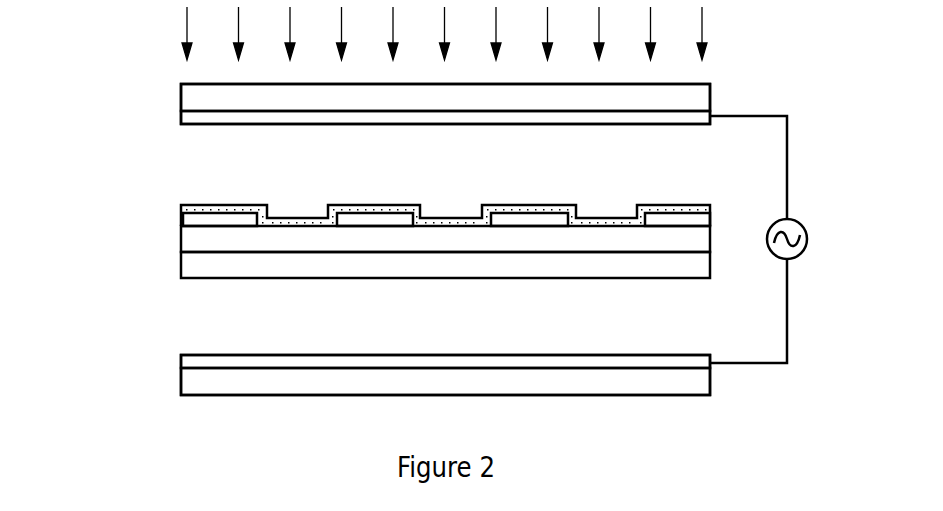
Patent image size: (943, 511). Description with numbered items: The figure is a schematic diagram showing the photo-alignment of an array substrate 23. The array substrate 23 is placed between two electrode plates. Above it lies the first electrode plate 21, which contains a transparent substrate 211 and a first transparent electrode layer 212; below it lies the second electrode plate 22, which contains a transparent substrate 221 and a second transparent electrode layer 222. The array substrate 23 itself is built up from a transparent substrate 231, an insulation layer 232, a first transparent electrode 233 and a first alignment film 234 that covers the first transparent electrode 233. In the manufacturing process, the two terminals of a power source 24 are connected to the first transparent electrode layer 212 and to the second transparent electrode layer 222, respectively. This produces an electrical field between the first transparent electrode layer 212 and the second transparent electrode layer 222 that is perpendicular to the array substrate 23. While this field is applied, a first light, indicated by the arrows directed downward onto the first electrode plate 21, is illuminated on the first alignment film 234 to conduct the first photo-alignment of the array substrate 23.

The first electrode plate 21 is at (80, 93).
The transparent substrate 211 is at (207, 95).
The first transparent electrode layer 212 is at (213, 117).
The second electrode plate 22 is at (80, 328).
The transparent substrate 221 is at (207, 380).
The second transparent electrode layer 222 is at (222, 358).
The array substrate 23 is at (80, 165).
The transparent substrate 231 is at (213, 264).
The insulation layer 232 is at (207, 239).
The first transparent electrode 233 is at (215, 218).
The first alignment film 234 is at (245, 206).
The power source 24 is at (803, 222).